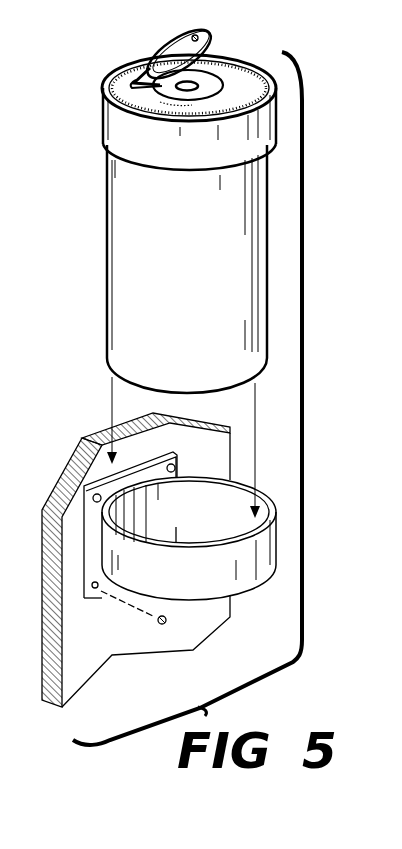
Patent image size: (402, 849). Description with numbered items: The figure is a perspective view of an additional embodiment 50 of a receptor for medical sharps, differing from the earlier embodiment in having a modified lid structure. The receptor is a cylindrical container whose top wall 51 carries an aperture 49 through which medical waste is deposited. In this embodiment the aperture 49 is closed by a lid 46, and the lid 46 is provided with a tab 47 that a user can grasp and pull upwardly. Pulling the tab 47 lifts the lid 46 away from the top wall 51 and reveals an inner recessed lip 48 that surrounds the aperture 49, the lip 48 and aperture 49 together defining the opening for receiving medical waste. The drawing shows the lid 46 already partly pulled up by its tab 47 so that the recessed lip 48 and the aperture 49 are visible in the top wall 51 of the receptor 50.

The lid 46 is at (166, 50).
The tab 47 is at (205, 32).
The inner recessed lip 48 is at (215, 86).
The aperture 49 is at (194, 80).
The receptor for medical sharps 50 is at (86, 238).
The top wall 51 is at (108, 80).